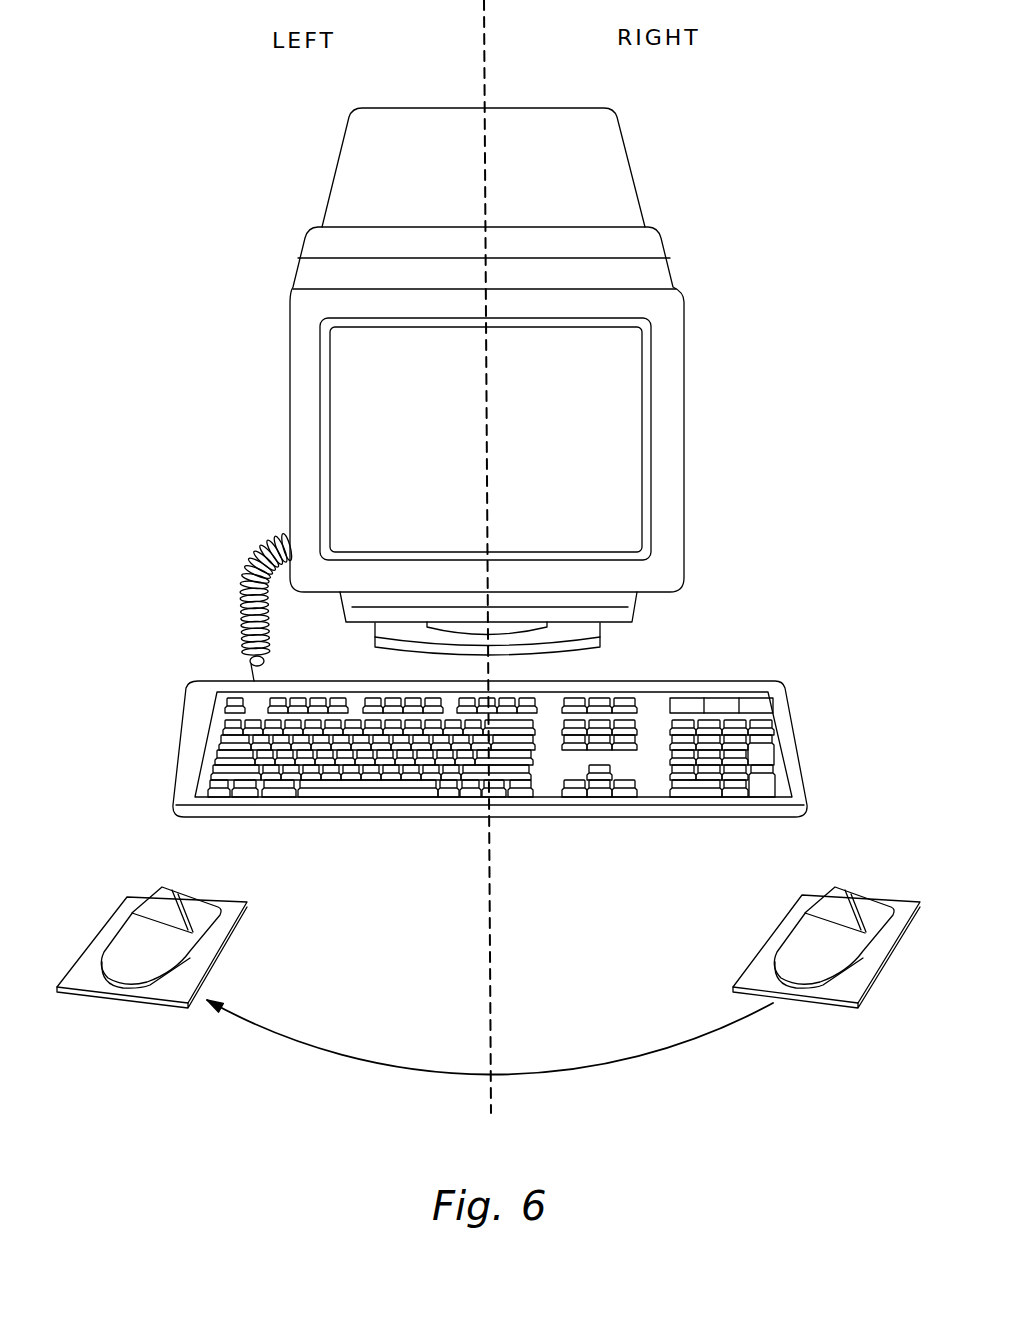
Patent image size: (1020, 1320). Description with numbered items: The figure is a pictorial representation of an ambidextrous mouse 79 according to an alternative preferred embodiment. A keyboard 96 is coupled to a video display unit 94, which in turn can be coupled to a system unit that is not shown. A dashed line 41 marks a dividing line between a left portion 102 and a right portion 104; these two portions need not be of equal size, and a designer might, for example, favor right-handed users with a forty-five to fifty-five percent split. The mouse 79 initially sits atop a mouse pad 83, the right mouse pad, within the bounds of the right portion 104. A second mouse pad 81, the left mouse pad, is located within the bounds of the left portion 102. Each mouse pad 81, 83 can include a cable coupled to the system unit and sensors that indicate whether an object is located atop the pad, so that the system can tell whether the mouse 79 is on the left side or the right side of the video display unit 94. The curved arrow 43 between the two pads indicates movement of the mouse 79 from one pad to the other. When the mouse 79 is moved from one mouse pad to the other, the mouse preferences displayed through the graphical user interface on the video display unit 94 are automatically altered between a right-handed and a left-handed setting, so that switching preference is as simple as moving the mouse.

The dashed line 41 is at (489, 904).
The arc of mouse movement between left and right positions 43 is at (677, 1045).
The ambidextrous mouse 79 is at (142, 983).
The mouse pad 81 is at (127, 897).
The mouse pad 83 is at (802, 895).
The video display unit 94 is at (685, 345).
The keyboard 96 is at (736, 678).
The left portion 102 is at (177, 258).
The right portion 104 is at (791, 258).